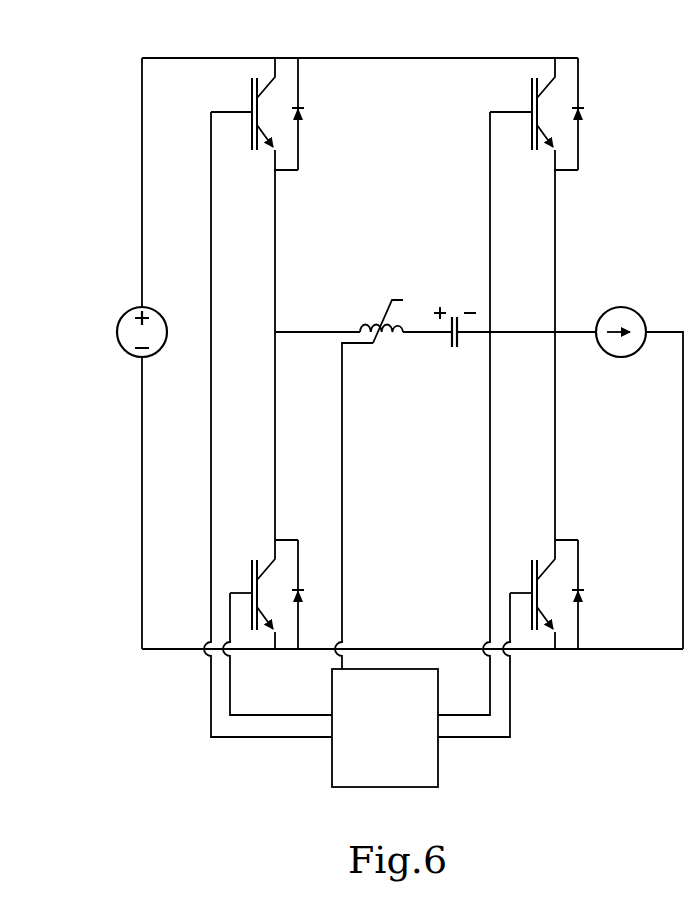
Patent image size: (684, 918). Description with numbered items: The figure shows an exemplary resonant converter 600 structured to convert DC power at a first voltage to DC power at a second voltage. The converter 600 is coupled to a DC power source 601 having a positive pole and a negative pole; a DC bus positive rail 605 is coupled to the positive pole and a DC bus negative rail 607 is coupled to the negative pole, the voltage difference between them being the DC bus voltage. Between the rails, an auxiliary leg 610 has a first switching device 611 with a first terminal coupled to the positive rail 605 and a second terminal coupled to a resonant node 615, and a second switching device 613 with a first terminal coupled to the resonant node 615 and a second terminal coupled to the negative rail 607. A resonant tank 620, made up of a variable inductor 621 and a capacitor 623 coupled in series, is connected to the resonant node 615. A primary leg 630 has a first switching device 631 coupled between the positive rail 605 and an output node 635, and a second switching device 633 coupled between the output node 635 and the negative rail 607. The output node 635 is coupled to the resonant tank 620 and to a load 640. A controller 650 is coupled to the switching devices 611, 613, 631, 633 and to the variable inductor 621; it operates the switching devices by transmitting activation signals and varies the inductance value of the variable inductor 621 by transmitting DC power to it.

The converter 600 is at (200, 752).
The DC power source 601 is at (119, 322).
The DC bus positive rail 605 is at (178, 58).
The DC bus negative rail 607 is at (178, 650).
The auxiliary leg 610 is at (296, 665).
The first switching device 611 is at (252, 150).
The second switching device 613 is at (254, 560).
The resonant node 615 is at (275, 332).
The resonant tank 620 is at (406, 372).
The variable inductor 621 is at (360, 318).
The capacitor 623 is at (455, 318).
The primary leg 630 is at (576, 665).
The first switching device 631 is at (532, 150).
The second switching device 633 is at (534, 560).
The output node 635 is at (555, 332).
The load 640 is at (640, 352).
The controller 650 is at (357, 449).